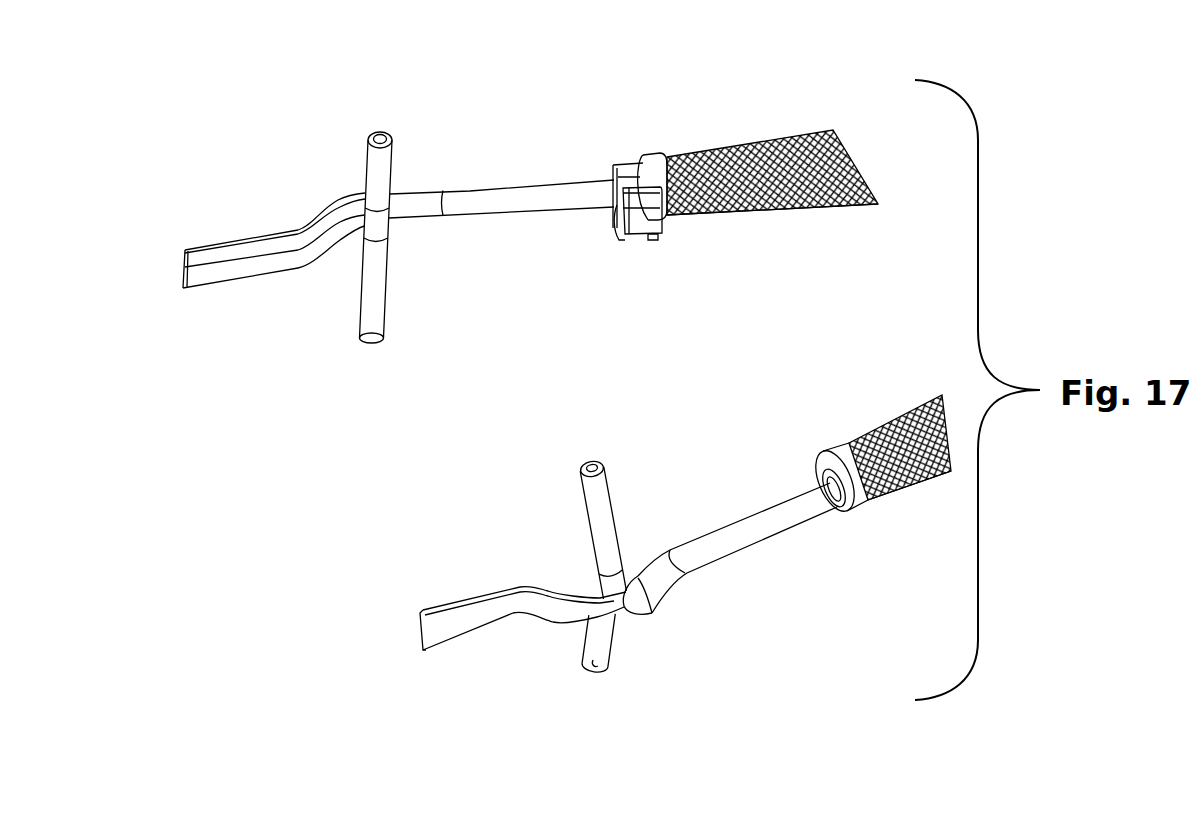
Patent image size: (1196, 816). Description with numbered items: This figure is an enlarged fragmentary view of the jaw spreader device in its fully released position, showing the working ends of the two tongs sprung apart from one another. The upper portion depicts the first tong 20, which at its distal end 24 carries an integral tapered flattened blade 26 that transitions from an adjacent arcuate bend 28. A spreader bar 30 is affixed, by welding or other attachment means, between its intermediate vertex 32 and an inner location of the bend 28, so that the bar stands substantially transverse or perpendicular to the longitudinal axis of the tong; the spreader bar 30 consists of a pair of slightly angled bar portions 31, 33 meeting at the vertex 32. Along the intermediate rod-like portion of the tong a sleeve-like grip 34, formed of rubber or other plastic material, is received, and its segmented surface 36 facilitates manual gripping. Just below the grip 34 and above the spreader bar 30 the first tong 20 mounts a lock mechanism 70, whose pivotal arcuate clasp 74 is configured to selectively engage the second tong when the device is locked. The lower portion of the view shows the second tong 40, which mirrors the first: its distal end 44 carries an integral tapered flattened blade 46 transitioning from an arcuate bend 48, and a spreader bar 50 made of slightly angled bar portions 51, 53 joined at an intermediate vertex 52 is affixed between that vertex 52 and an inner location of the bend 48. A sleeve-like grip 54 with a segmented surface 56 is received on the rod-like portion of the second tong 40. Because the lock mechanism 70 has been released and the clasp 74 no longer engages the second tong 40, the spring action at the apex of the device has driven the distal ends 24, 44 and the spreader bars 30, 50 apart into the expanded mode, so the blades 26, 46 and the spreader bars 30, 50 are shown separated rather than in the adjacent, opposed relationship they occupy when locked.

The first tong 20 is at (502, 203).
The distal end 24 is at (182, 256).
The tapered flattened blade 26 is at (222, 275).
The arcuate bend 28 is at (340, 202).
The spreader bar 30 is at (397, 157).
The bar portion 31 is at (368, 190).
The vertex 32 is at (373, 223).
The bar portion 33 is at (360, 346).
The grip 34 is at (733, 145).
The segmented surface 36 is at (793, 208).
The lock mechanism 70 is at (630, 153).
The clasp 74 is at (650, 241).
The second tong 40 is at (747, 535).
The distal end 44 is at (400, 643).
The tapered flattened blade 46 is at (442, 630).
The arcuate bend 48 is at (628, 615).
The spreader bar 50 is at (627, 530).
The bar portion 51 is at (600, 513).
The vertex 52 is at (600, 583).
The bar portion 53 is at (611, 672).
The grip 54 is at (888, 420).
The segmented surface 56 is at (913, 483).